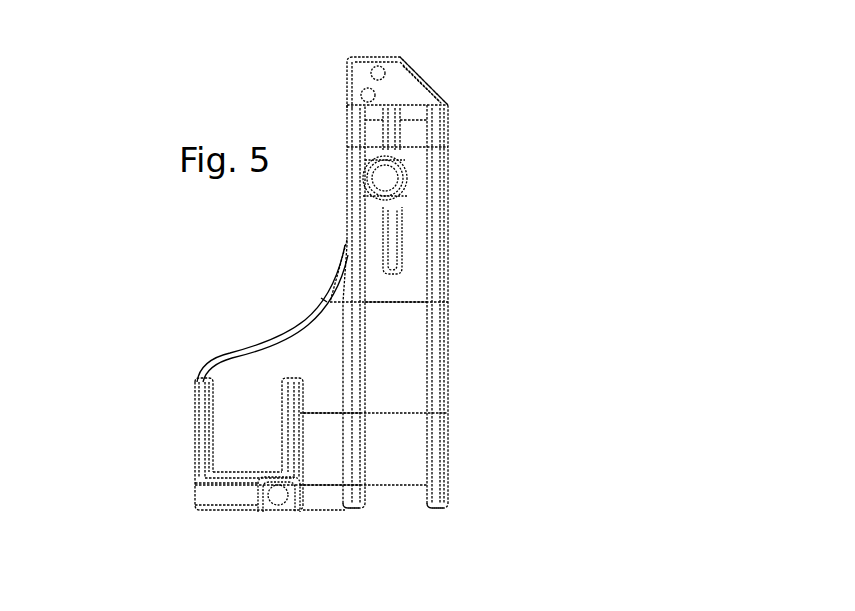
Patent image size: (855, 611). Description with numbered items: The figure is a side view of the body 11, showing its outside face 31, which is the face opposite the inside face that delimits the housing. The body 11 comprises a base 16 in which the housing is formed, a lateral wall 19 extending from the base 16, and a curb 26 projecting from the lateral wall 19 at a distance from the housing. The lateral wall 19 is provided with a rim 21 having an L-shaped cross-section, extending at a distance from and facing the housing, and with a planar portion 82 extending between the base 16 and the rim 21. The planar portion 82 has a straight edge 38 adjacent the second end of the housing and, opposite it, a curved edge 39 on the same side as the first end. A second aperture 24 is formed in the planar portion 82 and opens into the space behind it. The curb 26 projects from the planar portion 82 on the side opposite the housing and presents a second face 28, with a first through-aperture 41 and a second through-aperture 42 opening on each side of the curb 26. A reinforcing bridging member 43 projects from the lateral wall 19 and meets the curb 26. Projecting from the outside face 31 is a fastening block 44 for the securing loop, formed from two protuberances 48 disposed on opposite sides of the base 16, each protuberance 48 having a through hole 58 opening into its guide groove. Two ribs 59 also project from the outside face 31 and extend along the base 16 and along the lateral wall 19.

The body 11 is at (117, 262).
The base 16 is at (130, 430).
The lateral wall 19 is at (515, 203).
The rim 21 is at (447, 107).
The second aperture 24 is at (385, 180).
The curb 26 is at (374, 57).
The second face 28 is at (393, 85).
The outside face 31 is at (411, 389).
The straight edge 38 is at (447, 270).
The curved edge 39 is at (281, 333).
The first through-aperture 41 is at (372, 72).
The second through-aperture 42 is at (362, 95).
The reinforcing bridging member 43 is at (425, 86).
The fastening block 44 is at (179, 491).
The protuberance 48 is at (216, 495).
The through hole 58 is at (278, 498).
The rib 59 is at (357, 508).
The planar portion 82 is at (415, 287).